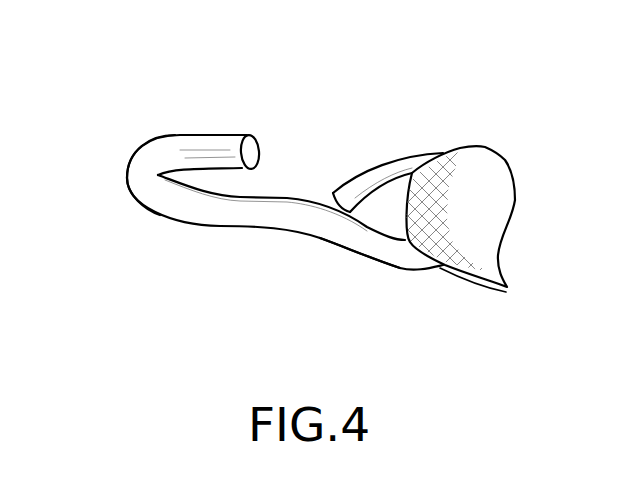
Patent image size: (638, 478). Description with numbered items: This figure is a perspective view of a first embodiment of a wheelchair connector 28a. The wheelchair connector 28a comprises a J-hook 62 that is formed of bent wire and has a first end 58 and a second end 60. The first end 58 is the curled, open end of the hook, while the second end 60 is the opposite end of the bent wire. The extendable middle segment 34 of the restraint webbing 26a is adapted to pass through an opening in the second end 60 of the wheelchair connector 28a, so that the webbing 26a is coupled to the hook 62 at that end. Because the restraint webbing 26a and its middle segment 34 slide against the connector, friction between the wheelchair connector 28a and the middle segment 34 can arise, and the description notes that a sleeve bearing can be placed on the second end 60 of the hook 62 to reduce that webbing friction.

The restraint webbing 26a is at (489, 112).
The wheelchair connector 28a is at (248, 218).
The extendable middle segment 34 is at (453, 167).
The first end 58 is at (140, 178).
The second end 60 is at (387, 253).
The J-hook 62 is at (301, 108).